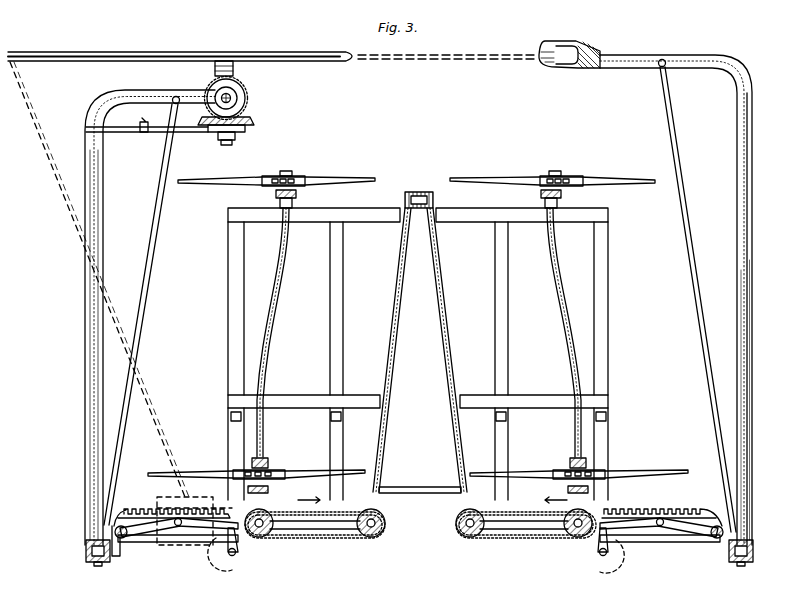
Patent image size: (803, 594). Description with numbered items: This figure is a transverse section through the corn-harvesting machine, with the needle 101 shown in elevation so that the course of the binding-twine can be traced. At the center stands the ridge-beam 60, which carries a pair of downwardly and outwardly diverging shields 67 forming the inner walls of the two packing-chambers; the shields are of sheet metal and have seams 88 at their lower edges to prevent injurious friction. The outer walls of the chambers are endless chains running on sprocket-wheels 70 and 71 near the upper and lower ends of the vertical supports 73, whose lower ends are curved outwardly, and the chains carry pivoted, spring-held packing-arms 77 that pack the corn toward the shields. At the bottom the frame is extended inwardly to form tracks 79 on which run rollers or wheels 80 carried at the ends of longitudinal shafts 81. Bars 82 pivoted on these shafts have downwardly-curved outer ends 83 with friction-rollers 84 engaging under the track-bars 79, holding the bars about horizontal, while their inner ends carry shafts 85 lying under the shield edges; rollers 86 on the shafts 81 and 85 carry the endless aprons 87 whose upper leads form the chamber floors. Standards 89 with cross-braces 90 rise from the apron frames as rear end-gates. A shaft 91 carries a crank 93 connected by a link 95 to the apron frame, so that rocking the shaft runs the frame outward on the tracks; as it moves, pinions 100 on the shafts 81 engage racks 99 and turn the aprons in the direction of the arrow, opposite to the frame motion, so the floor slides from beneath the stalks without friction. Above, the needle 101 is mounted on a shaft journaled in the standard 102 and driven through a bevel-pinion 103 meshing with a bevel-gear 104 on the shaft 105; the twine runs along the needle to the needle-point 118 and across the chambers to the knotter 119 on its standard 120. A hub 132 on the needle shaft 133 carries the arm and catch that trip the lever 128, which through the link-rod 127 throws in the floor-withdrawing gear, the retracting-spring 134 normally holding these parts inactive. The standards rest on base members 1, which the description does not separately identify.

The base foot 1 is at (86, 551).
The ridge-beam 60 is at (420, 190).
The shields 67 is at (445, 362).
The sprocket-wheels 70 is at (296, 176).
The sprocket-wheels 71 is at (270, 471).
The vertical supports 73 is at (270, 354).
The packing-arms 77 is at (360, 180).
The tracks 79 is at (214, 544).
The rollers or wheels 80 is at (272, 538).
The shafts 81 is at (236, 556).
The bars 82 is at (326, 530).
The downwardly-curved outer ends 83 is at (224, 556).
The friction-rollers 84 is at (416, 566).
The shafts 85 is at (386, 538).
The rollers 86 is at (456, 526).
The endless aprons 87 is at (378, 540).
The seams 88 is at (378, 490).
The standards 89 is at (335, 439).
The cross pieces or braces 90 is at (376, 218).
The shaft 91 is at (116, 558).
The crank 93 is at (150, 530).
The links 95 is at (196, 528).
The toothed bars or racks 99 is at (130, 508).
The pinions 100 is at (270, 510).
The needle 101 is at (218, 51).
The standard or support 102 is at (85, 344).
The bevel-pinion 103 is at (252, 116).
The bevel-gear 104 is at (242, 96).
The shaft 105 is at (284, 99).
The needle-point 118 is at (476, 590).
The knotter 119 is at (570, 39).
The standard 120 is at (752, 304).
The link-rod 127 is at (144, 134).
The lever 128 is at (132, 134).
The hub 132 is at (238, 138).
The nut 133 is at (226, 147).
The retracting-spring 134 is at (175, 112).